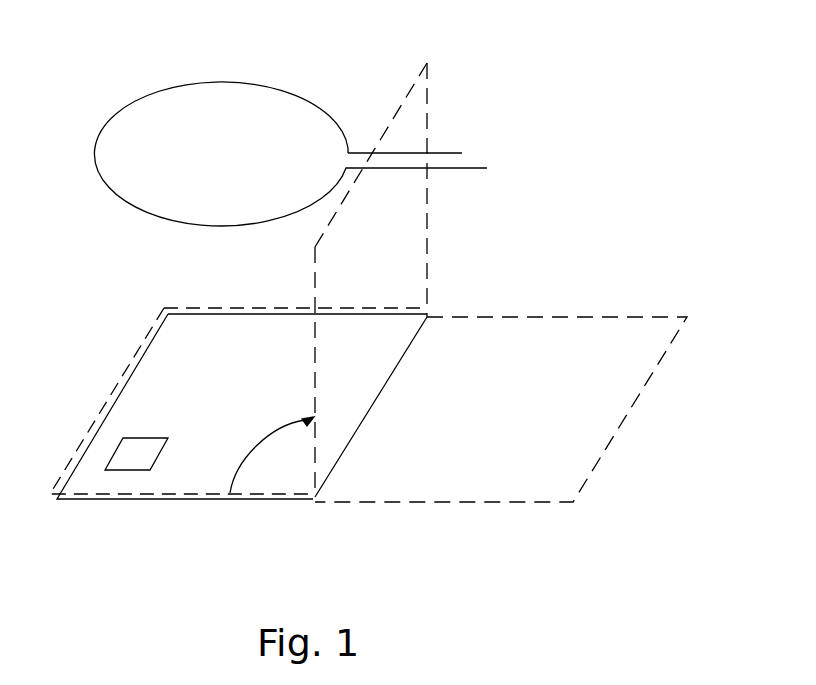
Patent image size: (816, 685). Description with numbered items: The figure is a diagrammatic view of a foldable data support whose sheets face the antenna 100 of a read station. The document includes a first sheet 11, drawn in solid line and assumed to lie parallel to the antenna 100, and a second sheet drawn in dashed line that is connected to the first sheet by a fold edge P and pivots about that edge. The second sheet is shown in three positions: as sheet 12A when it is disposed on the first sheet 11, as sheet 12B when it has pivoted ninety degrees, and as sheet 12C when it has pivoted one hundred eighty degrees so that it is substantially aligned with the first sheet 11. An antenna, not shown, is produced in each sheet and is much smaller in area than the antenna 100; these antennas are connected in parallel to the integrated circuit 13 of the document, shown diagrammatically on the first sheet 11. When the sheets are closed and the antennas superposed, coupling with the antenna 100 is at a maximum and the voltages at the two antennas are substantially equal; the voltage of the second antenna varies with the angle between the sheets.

The antenna of the read station 100 is at (233, 82).
The first sheet 11 is at (168, 500).
The second sheet disposed on the first sheet 12A is at (127, 494).
The second sheet pivoted 90° 12B is at (427, 212).
The second sheet pivoted 180° 12C is at (615, 317).
The integrated circuit 13 is at (142, 448).
The fold edge P is at (382, 392).